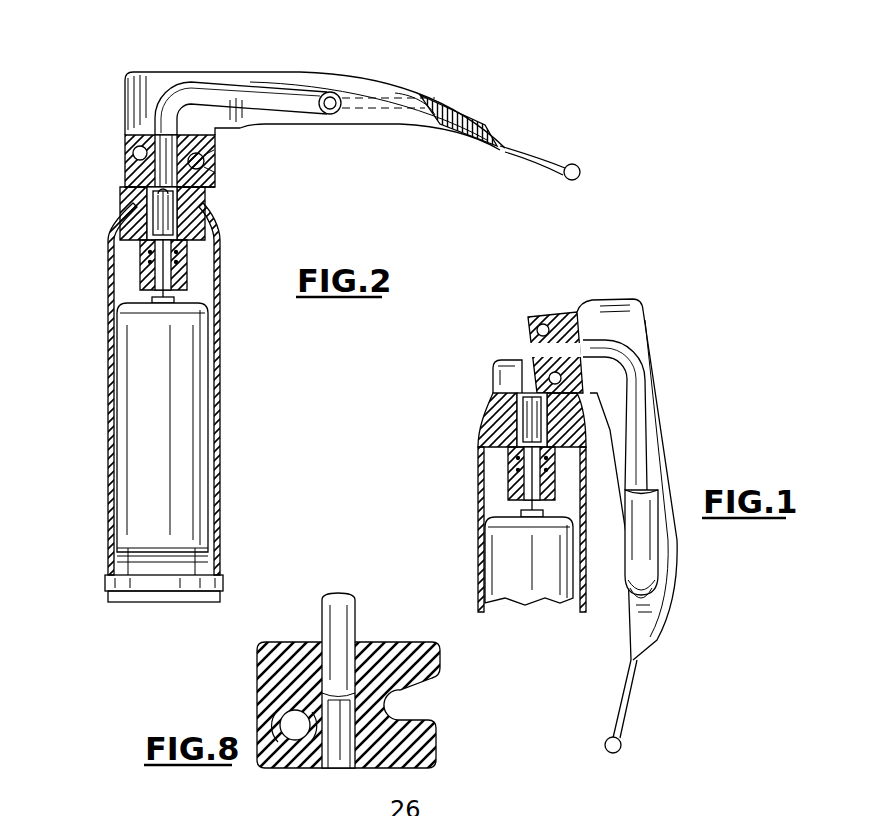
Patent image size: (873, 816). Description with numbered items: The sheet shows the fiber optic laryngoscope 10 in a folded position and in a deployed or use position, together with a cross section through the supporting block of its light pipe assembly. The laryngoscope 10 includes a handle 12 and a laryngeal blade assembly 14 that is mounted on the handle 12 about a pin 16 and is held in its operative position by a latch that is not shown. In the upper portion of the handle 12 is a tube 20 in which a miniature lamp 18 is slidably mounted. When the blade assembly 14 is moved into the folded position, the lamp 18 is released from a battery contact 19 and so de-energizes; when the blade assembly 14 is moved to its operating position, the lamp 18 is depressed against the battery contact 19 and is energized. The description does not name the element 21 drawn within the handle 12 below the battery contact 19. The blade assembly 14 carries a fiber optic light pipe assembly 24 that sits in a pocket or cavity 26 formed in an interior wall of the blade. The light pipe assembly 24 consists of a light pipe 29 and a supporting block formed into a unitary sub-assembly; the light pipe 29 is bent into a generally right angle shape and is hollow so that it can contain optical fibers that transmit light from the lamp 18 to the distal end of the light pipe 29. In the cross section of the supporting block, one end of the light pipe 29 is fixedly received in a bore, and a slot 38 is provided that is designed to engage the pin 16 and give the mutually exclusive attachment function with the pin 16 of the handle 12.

In FIG. 2, the fiber optic laryngoscope 10 is at (175, 392).
In FIG. 2, the handle 12 is at (110, 431).
In FIG. 1, the handle 12 is at (478, 520).
In FIG. 2, the laryngeal blade assembly 14 is at (393, 68).
In FIG. 1, the laryngeal blade assembly 14 is at (672, 422).
In FIG. 2, the pin 16 is at (205, 161).
In FIG. 2, the miniature lamp 18 is at (123, 203).
In FIG. 1, the miniature lamp 18 is at (498, 410).
In FIG. 2, the battery contact 19 is at (188, 276).
In FIG. 1, the battery contact 19 is at (508, 485).
In FIG. 2, the tube 20 is at (206, 206).
In FIG. 2, the gas cartridge 21 is at (143, 468).
In FIG. 1, the gas cartridge 21 is at (505, 578).
In FIG. 1, the fiber optic light pipe assembly 24 is at (633, 355).
In FIG. 1, the pocket or cavity 26 is at (655, 573).
In FIG. 2, the light pipe 29 is at (256, 92).
In FIG. 8, the light pipe 29 is at (340, 620).
In FIG. 8, the slot 38 is at (400, 707).